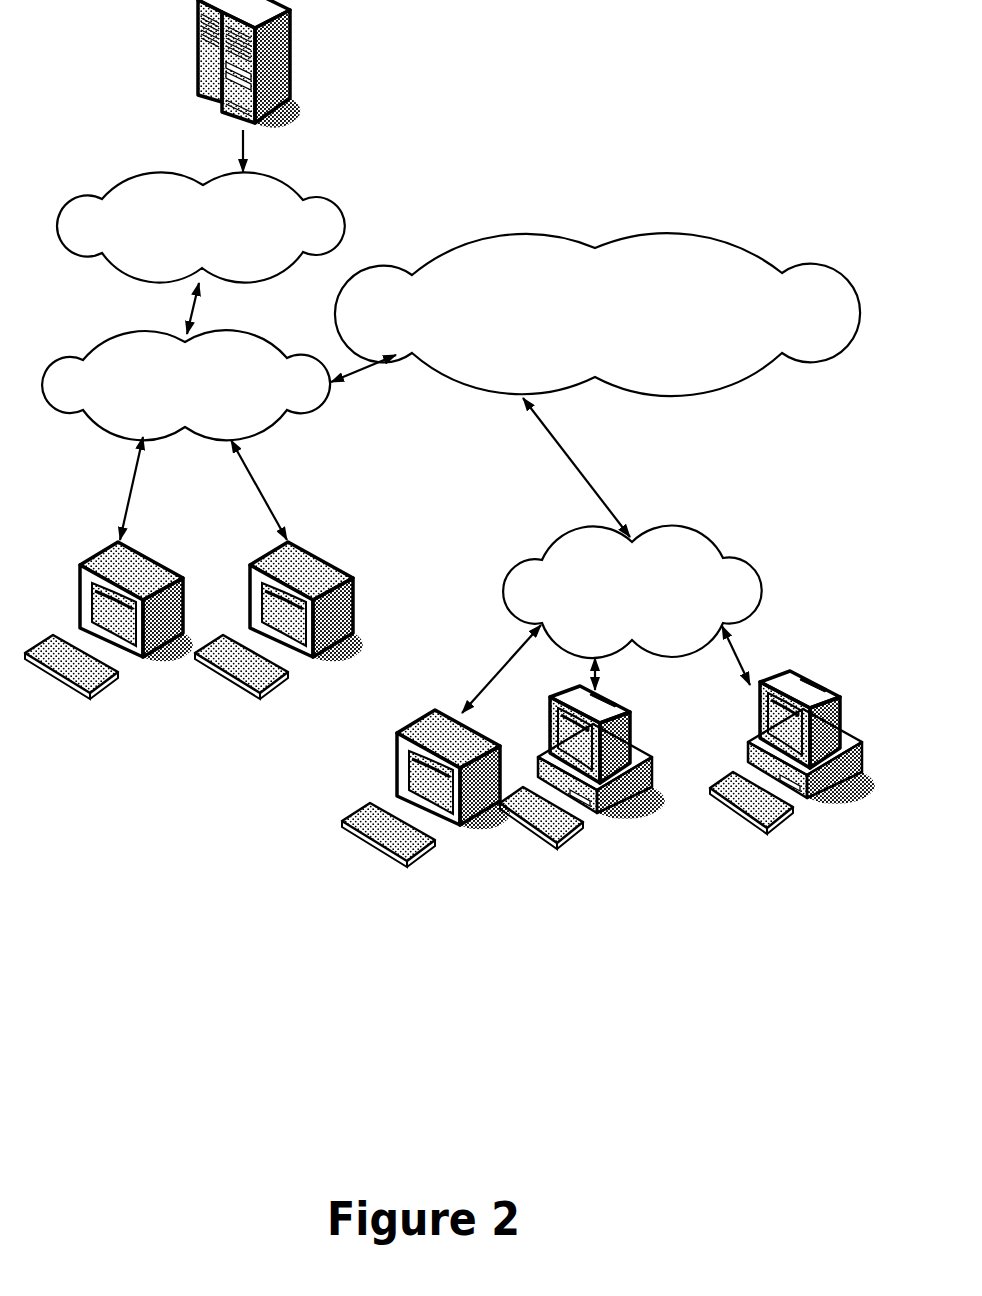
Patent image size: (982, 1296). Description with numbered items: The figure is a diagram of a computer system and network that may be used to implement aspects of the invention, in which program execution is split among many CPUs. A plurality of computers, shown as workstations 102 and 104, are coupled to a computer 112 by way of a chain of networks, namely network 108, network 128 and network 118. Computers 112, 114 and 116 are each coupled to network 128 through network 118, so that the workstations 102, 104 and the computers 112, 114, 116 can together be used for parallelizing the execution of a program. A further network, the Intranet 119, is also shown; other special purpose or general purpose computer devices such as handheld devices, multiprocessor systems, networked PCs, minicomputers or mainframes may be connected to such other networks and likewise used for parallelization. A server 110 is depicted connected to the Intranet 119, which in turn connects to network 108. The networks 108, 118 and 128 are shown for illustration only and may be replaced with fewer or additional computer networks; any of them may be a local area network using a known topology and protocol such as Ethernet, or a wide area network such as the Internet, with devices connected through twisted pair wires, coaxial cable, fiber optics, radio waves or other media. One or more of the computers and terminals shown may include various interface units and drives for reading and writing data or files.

The server 110 is at (197, 50).
The Intranet 119 is at (183, 261).
The network 108 is at (168, 419).
The network 128 is at (578, 349).
The network 118 is at (615, 628).
The workstation 102 is at (78, 546).
The workstation 104 is at (336, 549).
The computer 112 is at (395, 732).
The computer 114 is at (597, 817).
The computer 116 is at (818, 678).